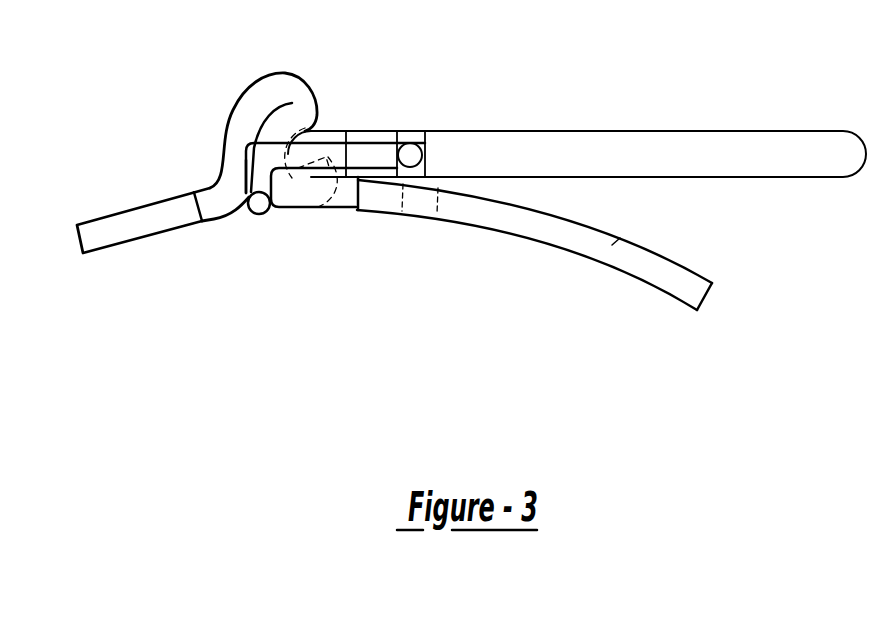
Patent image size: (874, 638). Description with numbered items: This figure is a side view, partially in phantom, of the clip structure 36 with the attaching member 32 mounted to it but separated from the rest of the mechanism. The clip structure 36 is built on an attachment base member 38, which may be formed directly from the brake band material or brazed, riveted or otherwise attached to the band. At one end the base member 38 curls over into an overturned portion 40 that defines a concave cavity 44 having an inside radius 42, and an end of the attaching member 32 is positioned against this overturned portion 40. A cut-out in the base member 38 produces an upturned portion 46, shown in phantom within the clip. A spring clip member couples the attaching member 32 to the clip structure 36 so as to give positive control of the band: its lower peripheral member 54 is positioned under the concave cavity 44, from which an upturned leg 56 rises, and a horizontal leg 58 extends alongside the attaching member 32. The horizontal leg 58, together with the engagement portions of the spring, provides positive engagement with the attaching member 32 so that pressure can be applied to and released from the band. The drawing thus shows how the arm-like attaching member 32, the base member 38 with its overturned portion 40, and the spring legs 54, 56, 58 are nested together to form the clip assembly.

The attaching member 32 is at (660, 143).
The clip structure 36 is at (483, 232).
The attachment base member 38 is at (603, 247).
The overturned portion 40 is at (297, 73).
The inside radius 42 is at (290, 148).
The concave cavity 44 is at (232, 215).
The upturned portion 46 is at (330, 163).
The lower peripheral member 54 is at (262, 212).
The upturned leg 56 is at (263, 196).
The horizontal leg 58 is at (398, 155).